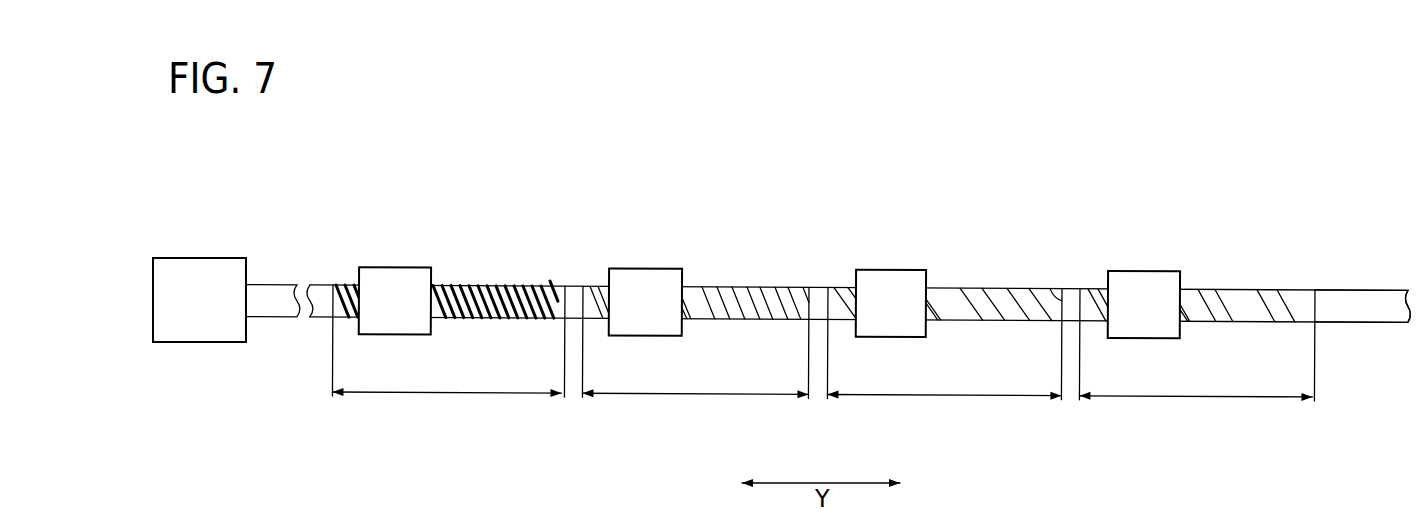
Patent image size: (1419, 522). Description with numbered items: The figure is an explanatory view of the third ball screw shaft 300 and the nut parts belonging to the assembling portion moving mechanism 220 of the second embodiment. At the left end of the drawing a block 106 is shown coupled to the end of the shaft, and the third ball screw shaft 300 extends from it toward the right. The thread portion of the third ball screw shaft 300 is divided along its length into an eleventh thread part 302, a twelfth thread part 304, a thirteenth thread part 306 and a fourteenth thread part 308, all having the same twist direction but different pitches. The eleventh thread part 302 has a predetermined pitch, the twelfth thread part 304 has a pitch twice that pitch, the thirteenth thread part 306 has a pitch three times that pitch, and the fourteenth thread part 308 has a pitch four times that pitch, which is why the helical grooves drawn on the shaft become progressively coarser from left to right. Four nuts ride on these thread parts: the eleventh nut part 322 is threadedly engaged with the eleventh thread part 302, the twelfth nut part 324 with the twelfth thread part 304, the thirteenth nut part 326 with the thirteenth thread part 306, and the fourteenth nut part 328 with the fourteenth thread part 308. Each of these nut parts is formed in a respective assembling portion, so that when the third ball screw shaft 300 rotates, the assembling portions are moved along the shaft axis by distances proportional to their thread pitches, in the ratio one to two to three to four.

The motor 106 is at (201, 274).
The third ball screw shaft 300 is at (278, 291).
The assembling portion moving mechanism 220 is at (1075, 170).
The eleventh nut part 322 is at (394, 268).
The twelfth nut part 324 is at (643, 268).
The thirteenth nut part 326 is at (889, 270).
The fourteenth nut part 328 is at (1143, 272).
The eleventh thread part 302 is at (504, 318).
The twelfth thread part 304 is at (751, 318).
The thirteenth thread part 306 is at (999, 318).
The fourteenth thread part 308 is at (1255, 318).